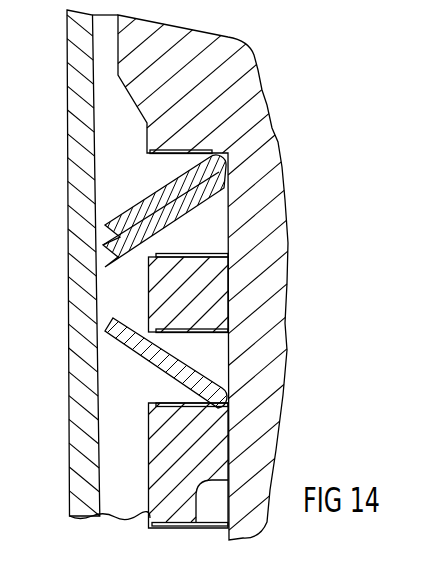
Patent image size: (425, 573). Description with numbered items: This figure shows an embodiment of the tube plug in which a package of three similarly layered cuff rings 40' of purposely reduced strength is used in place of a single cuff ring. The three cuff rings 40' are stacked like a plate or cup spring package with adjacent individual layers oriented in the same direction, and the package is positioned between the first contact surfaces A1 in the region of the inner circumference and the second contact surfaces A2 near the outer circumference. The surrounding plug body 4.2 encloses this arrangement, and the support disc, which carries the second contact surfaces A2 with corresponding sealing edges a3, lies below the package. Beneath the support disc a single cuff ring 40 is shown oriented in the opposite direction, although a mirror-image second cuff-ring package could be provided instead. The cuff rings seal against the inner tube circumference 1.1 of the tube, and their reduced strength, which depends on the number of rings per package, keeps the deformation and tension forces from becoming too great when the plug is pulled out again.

The inner tube circumference 1.1 is at (68, 380).
The housing body 4.2 is at (208, 50).
The first contact surface A1 is at (220, 156).
The second contact surface A2 is at (152, 263).
The sealing edge a3 is at (150, 251).
The cuff ring 40' is at (164, 211).
The cuff ring 40 is at (166, 363).